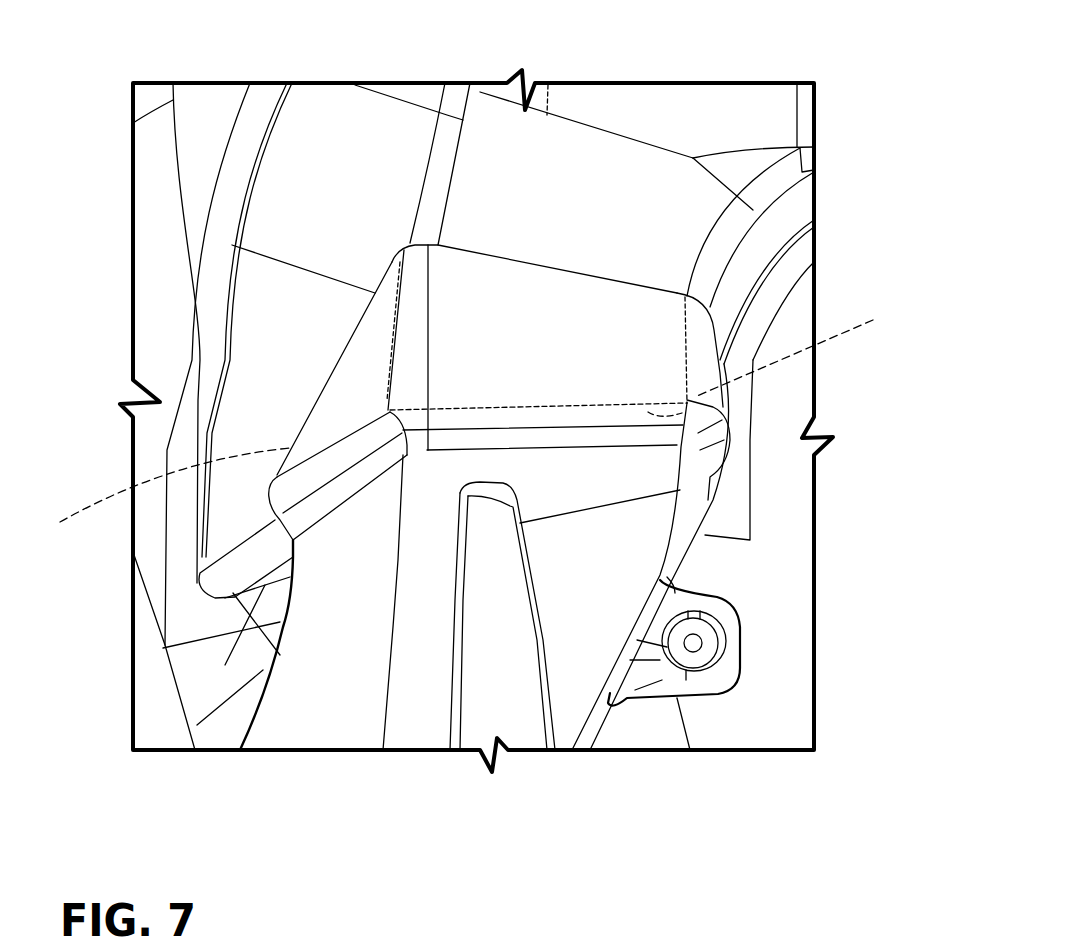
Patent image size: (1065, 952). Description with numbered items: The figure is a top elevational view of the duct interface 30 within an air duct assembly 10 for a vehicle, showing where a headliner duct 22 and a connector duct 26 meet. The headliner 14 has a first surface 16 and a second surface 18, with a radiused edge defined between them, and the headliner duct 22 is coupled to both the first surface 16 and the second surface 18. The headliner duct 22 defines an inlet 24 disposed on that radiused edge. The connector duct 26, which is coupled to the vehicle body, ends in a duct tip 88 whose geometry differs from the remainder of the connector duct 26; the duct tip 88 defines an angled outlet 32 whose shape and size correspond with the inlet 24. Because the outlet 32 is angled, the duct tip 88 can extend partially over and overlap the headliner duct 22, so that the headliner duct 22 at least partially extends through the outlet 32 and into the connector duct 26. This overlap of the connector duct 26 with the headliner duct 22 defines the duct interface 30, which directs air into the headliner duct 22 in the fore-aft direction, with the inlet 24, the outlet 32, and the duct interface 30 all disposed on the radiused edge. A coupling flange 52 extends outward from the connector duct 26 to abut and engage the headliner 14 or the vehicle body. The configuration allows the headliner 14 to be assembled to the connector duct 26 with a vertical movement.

The air duct assembly 10 is at (864, 169).
The headliner 14 is at (787, 600).
The first surface 16 is at (767, 560).
The second surface 18 is at (263, 663).
The headliner duct 22 is at (678, 128).
The inlet 24 is at (775, 355).
The connector duct 26 is at (342, 700).
The duct interface 30 is at (735, 435).
The outlet 32 is at (158, 501).
The coupling flange 52 is at (707, 687).
The duct tip 88 is at (353, 395).